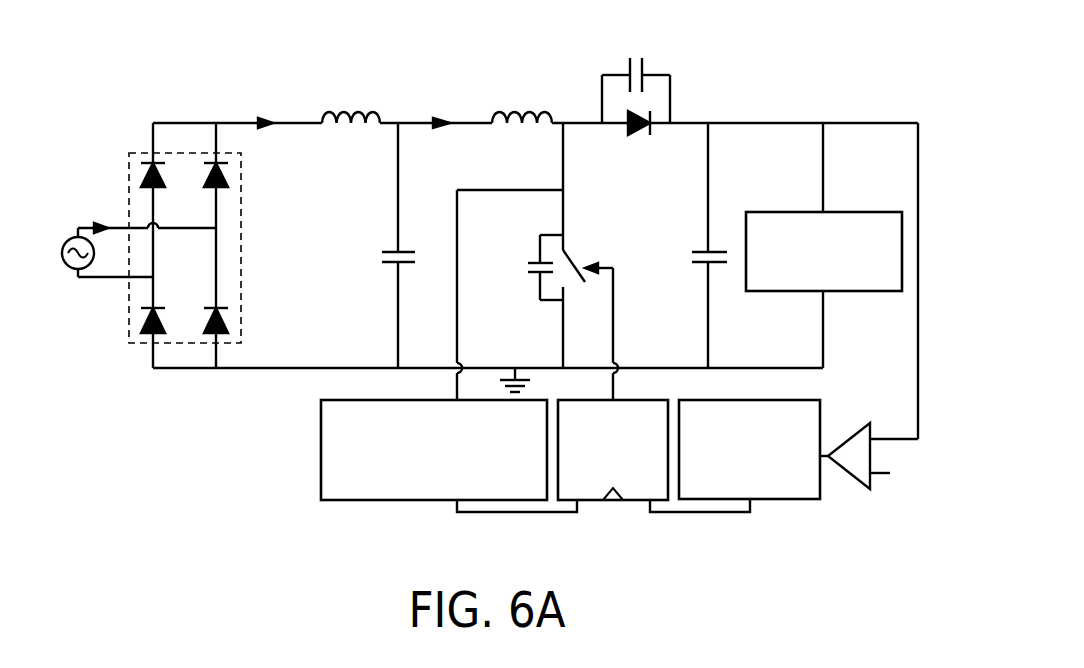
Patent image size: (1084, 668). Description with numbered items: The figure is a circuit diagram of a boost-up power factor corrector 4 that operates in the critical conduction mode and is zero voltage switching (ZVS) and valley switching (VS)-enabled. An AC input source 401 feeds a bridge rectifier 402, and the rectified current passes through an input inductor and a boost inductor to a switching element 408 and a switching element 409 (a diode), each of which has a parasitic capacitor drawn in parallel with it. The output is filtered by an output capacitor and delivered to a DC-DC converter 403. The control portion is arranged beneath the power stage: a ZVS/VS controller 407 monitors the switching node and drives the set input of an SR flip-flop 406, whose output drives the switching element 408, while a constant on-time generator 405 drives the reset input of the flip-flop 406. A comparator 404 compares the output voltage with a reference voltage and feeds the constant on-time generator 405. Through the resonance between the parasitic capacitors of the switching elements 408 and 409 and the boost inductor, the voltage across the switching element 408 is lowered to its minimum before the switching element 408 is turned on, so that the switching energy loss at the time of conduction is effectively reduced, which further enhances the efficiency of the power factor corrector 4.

The power factor corrector 4 is at (199, 17).
The AC input source 401 is at (70, 272).
The bridge rectifier 402 is at (188, 152).
The DC-DC converter 403 is at (878, 212).
The comparator 404 is at (848, 472).
The constant on-time generator 405 is at (775, 500).
The SR flip-flop 406 is at (615, 503).
The ZVS/VS controller 407 is at (320, 450).
The switching element 408 is at (580, 240).
The switching element 409 is at (680, 90).